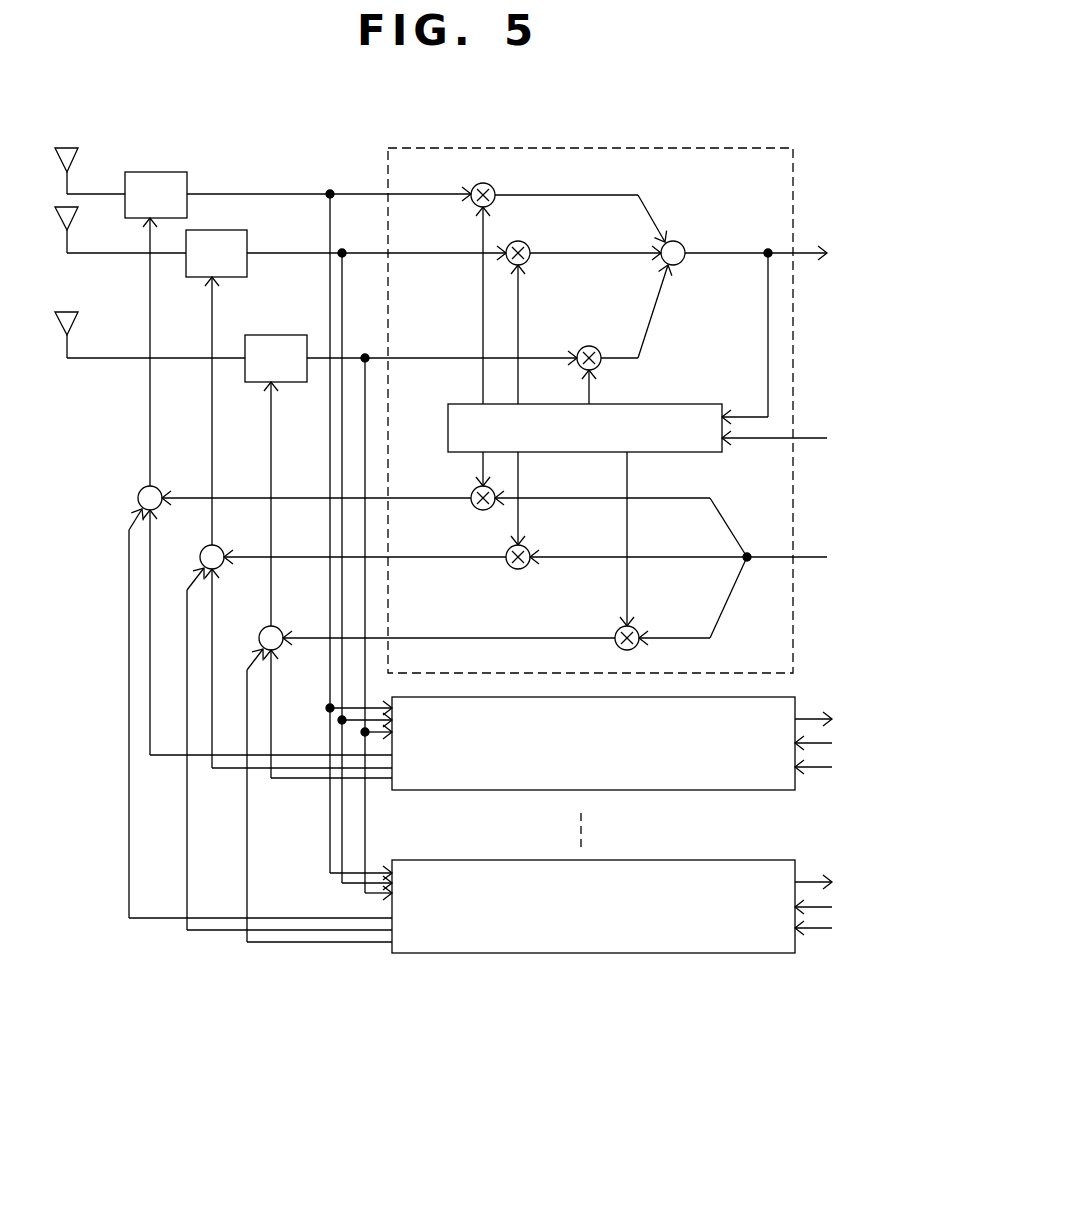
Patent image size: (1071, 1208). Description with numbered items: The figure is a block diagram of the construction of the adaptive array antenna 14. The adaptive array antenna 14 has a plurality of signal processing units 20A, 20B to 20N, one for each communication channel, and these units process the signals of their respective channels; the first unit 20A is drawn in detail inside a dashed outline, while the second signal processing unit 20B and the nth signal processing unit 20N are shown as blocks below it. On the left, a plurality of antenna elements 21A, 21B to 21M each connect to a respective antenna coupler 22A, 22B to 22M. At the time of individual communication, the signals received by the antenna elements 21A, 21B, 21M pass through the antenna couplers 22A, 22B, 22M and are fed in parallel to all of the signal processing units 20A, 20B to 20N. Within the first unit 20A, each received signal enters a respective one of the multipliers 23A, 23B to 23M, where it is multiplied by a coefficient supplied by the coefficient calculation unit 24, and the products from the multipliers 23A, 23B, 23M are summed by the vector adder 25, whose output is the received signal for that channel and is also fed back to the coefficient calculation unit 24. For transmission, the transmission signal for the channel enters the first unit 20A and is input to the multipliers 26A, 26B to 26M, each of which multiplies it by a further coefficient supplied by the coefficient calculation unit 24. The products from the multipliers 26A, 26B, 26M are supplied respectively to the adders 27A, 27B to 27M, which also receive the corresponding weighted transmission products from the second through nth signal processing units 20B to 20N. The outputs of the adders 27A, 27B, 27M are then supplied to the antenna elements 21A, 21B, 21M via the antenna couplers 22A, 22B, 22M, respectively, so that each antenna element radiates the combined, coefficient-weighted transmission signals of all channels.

The adaptive array antenna 14 is at (602, 1057).
The signal processing unit 20A is at (577, 147).
The signal processing unit 20B is at (642, 790).
The signal processing unit 20N is at (655, 953).
The antenna element 21A is at (80, 150).
The antenna element 21B is at (78, 210).
The antenna element 21M is at (72, 312).
The antenna coupler 22A is at (190, 171).
The antenna coupler 22B is at (238, 232).
The antenna coupler 22M is at (268, 335).
The multiplier 23A is at (494, 187).
The multiplier 23B is at (529, 246).
The multiplier 23M is at (585, 345).
The coefficient calculation unit 24 is at (672, 404).
The vector adder 25 is at (686, 246).
The multiplier 26A is at (479, 509).
The multiplier 26B is at (513, 569).
The multiplier 26M is at (618, 629).
The adder 27A is at (145, 486).
The adder 27B is at (204, 547).
The adder 27M is at (264, 628).